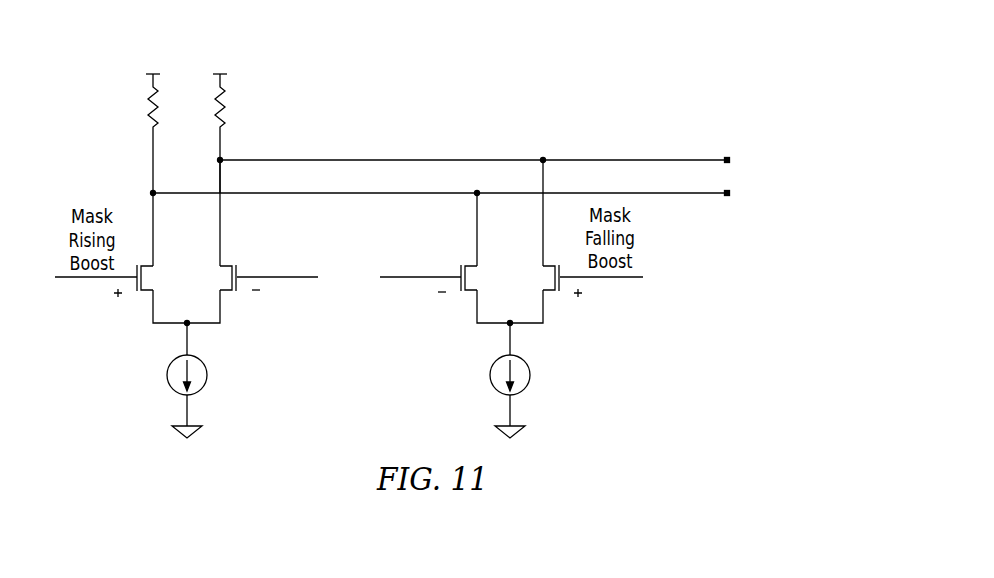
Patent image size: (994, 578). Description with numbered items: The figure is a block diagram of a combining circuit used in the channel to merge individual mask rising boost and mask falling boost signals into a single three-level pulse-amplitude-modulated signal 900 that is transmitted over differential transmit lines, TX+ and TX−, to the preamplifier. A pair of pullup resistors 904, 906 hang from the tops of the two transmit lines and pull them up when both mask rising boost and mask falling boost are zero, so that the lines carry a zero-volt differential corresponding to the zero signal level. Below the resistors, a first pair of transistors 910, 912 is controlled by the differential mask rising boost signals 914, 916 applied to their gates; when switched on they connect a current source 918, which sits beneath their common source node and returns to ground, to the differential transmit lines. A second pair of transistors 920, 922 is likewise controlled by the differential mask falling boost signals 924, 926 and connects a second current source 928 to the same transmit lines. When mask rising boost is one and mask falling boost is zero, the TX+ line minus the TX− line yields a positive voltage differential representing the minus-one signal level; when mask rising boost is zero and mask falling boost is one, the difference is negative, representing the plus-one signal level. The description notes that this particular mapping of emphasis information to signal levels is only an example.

The PAM-3 signal 900 is at (723, 110).
The pullup resistor 904 is at (151, 104).
The pullup resistor 906 is at (222, 100).
The transistor 910 is at (148, 291).
The transistor 912 is at (225, 291).
The differential mask rising boost signal 914 is at (91, 278).
The differential mask rising boost signal 916 is at (282, 278).
The current source 918 is at (171, 388).
The transistor 920 is at (550, 291).
The transistor 922 is at (470, 291).
The differential mask falling boost signal 924 is at (603, 278).
The differential mask falling boost signal 926 is at (415, 278).
The second current source 928 is at (494, 388).